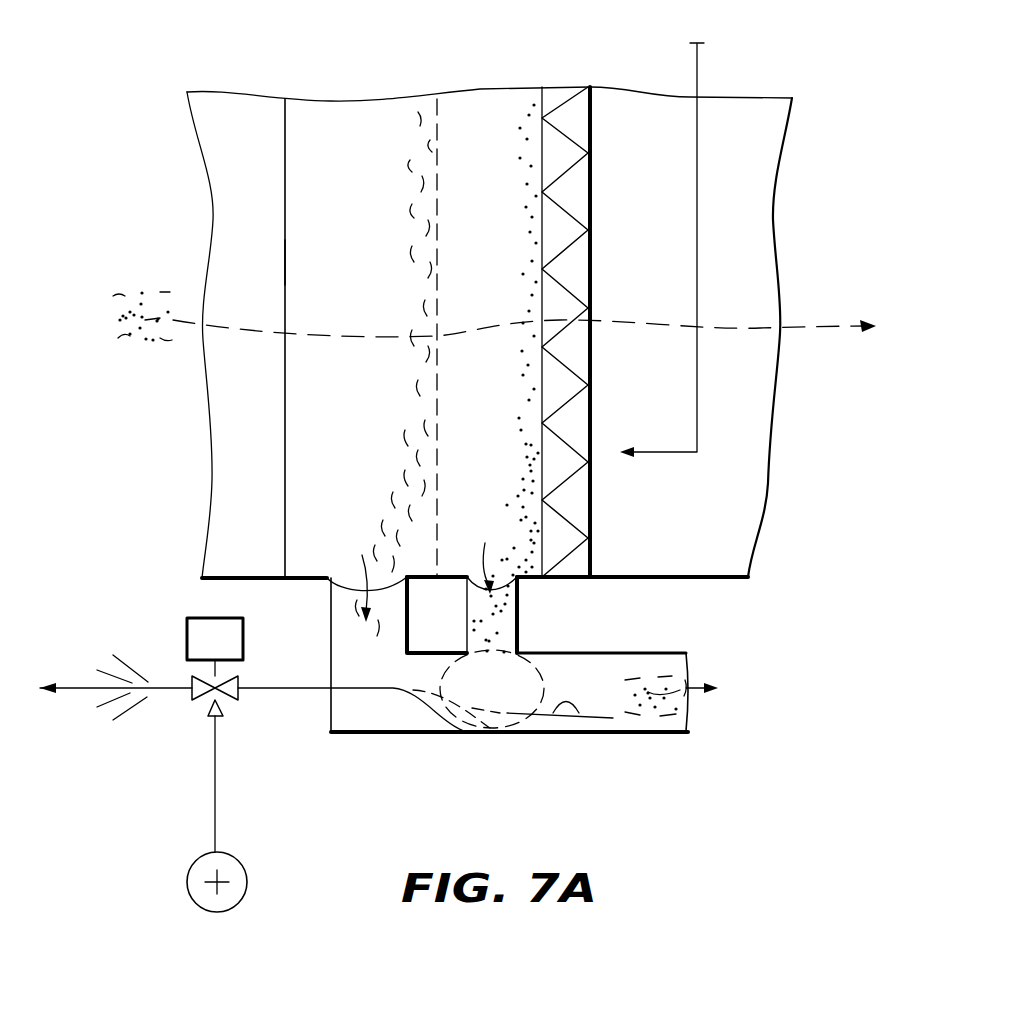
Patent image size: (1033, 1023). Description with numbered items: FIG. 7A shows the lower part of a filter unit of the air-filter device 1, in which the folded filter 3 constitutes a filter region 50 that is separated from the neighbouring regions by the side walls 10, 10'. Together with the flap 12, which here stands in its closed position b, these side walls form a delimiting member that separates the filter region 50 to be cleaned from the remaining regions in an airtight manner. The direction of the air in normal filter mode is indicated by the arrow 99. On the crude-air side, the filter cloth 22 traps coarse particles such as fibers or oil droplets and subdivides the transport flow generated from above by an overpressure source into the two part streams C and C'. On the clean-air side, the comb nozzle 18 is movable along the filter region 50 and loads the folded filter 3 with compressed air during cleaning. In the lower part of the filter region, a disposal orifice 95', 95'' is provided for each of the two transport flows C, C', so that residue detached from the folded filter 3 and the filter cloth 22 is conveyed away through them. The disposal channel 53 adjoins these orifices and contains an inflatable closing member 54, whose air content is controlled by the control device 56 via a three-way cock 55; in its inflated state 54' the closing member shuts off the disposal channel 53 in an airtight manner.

The air-filter device 1 is at (478, 716).
The folded filter 3 is at (591, 243).
The filter region 50 is at (608, 332).
The side wall 10 is at (489, 178).
The side wall 10' is at (467, 369).
The flap 12 is at (283, 207).
The comb nozzle 18 is at (733, 433).
The filter cloth 22 is at (433, 392).
The disposal channel 53 is at (622, 735).
The inflatable closing member 54 is at (550, 744).
The inflated state of closing member 54' is at (492, 689).
The valve 55 is at (179, 708).
The control device 56 is at (187, 630).
The disposal orifice 95' is at (505, 378).
The disposal orifice 95'' is at (373, 374).
The arrow indicating direction of air flow 99 is at (153, 323).
The closed position b is at (285, 261).
The transport flow C is at (526, 74).
The part stream of transport flow C' is at (325, 87).